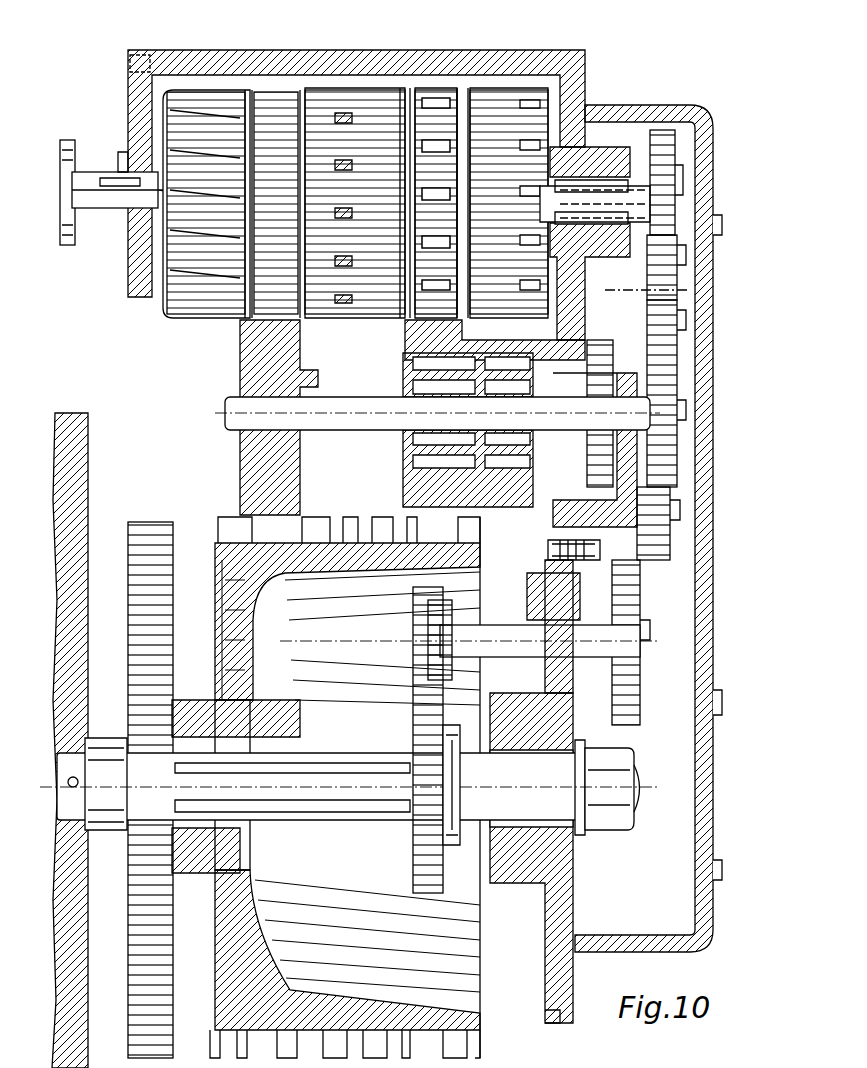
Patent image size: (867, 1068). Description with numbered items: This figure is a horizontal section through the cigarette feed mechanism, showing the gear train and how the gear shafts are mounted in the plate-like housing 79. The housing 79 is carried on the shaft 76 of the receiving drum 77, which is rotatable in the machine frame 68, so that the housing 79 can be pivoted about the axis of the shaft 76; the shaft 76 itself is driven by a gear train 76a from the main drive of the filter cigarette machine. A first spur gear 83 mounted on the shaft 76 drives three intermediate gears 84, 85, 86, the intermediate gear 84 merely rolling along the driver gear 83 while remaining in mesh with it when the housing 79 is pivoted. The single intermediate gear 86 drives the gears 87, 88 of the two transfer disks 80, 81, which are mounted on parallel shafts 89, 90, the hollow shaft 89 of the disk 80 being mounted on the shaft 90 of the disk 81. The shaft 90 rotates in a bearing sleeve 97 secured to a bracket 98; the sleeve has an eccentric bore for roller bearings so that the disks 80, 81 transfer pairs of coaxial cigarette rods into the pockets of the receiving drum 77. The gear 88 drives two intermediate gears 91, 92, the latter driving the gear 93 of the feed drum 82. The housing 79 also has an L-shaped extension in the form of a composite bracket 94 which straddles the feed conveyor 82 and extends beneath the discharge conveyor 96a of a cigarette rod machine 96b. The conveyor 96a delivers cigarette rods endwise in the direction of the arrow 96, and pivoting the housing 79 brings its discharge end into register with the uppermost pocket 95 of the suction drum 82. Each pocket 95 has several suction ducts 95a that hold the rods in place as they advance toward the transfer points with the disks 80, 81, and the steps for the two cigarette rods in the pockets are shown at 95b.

The machine frame 68 is at (84, 438).
The shaft 76 is at (578, 855).
The gear train 76a is at (157, 506).
The drum 77 is at (470, 1045).
The housing 79 is at (574, 918).
The transfer disk 80 is at (458, 500).
The transfer disk 81 is at (300, 487).
The feed conveyor 82 is at (382, 199).
The first spur gear 83 is at (437, 893).
The intermediate gear 84 is at (412, 595).
The intermediate gear 85 is at (630, 725).
The intermediate gear 86 is at (555, 520).
The gear 87 is at (582, 338).
The gear 88 is at (670, 490).
The hollow shaft 89 is at (525, 350).
The shaft 90 is at (350, 397).
The intermediate gear 91 is at (645, 316).
The intermediate gear 92 is at (645, 290).
The gear 93 is at (642, 178).
The composite bracket 94 is at (137, 112).
The pocket 95 is at (168, 300).
The suction duct 95a is at (440, 100).
The step 95b is at (352, 300).
The arrow 96 is at (160, 192).
The discharge conveyor 96a is at (70, 210).
The cigarette rod machine 96b is at (107, 214).
The bearing sleeve 97 is at (408, 450).
The bracket 98 is at (575, 510).